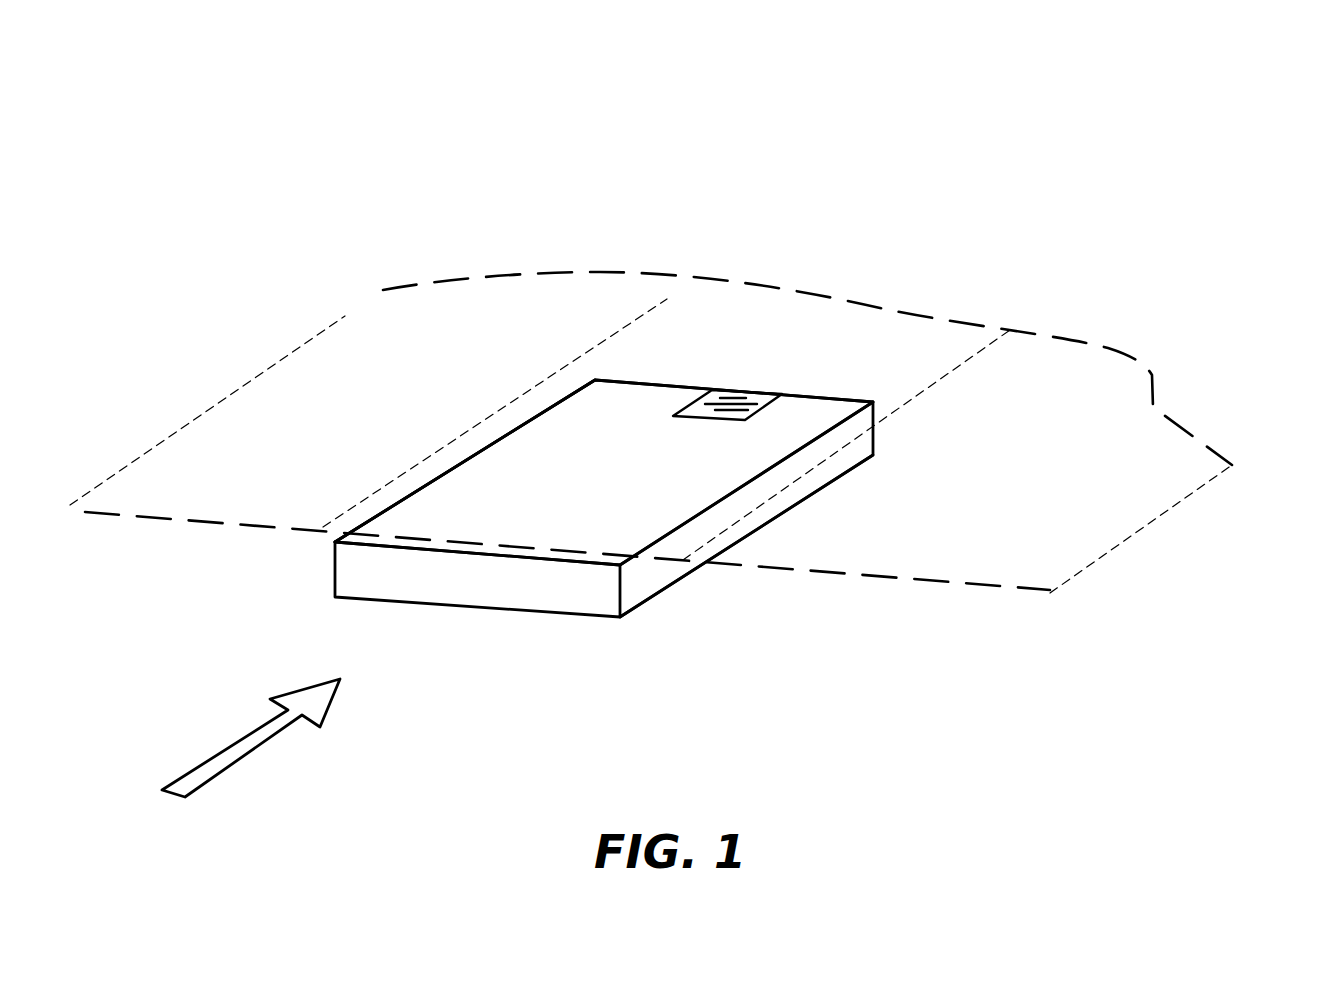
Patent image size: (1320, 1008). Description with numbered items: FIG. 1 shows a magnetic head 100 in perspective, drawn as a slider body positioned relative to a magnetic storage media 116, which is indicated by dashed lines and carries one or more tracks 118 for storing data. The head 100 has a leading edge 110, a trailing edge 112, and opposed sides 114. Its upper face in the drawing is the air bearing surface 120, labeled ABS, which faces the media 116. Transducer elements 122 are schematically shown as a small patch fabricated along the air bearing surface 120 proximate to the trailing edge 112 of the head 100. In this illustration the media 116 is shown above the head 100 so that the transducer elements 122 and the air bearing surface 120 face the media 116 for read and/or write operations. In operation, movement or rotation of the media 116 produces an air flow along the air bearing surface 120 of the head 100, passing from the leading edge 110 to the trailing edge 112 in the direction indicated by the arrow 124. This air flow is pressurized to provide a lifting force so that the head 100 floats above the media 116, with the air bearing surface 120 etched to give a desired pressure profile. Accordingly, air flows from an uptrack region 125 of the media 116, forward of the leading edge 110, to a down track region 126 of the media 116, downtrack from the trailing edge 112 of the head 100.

The magnetic head 100 is at (612, 385).
The leading edge 110 is at (467, 577).
The trailing edge 112 is at (762, 395).
The opposed sides 114 is at (455, 458).
The magnetic storage media 116 is at (1020, 393).
The tracks 118 is at (343, 320).
The air bearing surface 120 is at (604, 472).
The transducer elements 122 is at (744, 375).
The arrow 124 is at (200, 772).
The uptrack region 125 is at (398, 728).
The down track region 126 is at (917, 353).